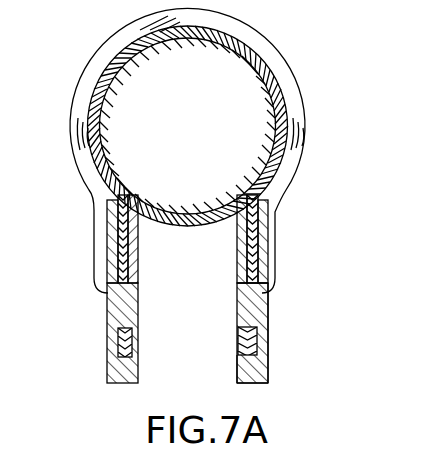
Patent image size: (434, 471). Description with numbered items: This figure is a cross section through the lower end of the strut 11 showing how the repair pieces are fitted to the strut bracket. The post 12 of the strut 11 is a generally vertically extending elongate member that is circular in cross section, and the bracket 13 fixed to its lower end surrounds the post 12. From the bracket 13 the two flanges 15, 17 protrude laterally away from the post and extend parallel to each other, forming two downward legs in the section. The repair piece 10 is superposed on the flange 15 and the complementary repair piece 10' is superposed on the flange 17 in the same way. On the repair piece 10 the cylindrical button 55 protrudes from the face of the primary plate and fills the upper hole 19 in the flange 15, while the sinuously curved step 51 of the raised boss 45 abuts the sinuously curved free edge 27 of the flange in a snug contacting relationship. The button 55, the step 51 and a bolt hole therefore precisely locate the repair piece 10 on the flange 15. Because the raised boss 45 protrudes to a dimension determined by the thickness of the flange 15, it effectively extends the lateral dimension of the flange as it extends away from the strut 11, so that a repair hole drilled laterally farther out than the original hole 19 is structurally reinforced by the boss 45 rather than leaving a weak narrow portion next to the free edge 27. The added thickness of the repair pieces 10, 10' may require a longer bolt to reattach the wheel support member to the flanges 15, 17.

The strut 11 is at (84, 42).
The post 12 is at (242, 88).
The bracket 13 is at (290, 102).
The flange 15 is at (247, 240).
The flange 17 is at (122, 242).
The hole 19 is at (238, 300).
The free edge 27 is at (237, 370).
The raised boss 45 is at (250, 375).
The step 51 is at (255, 347).
The button 55 is at (248, 308).
The repair piece 10 is at (311, 346).
The repair piece 10' is at (86, 339).